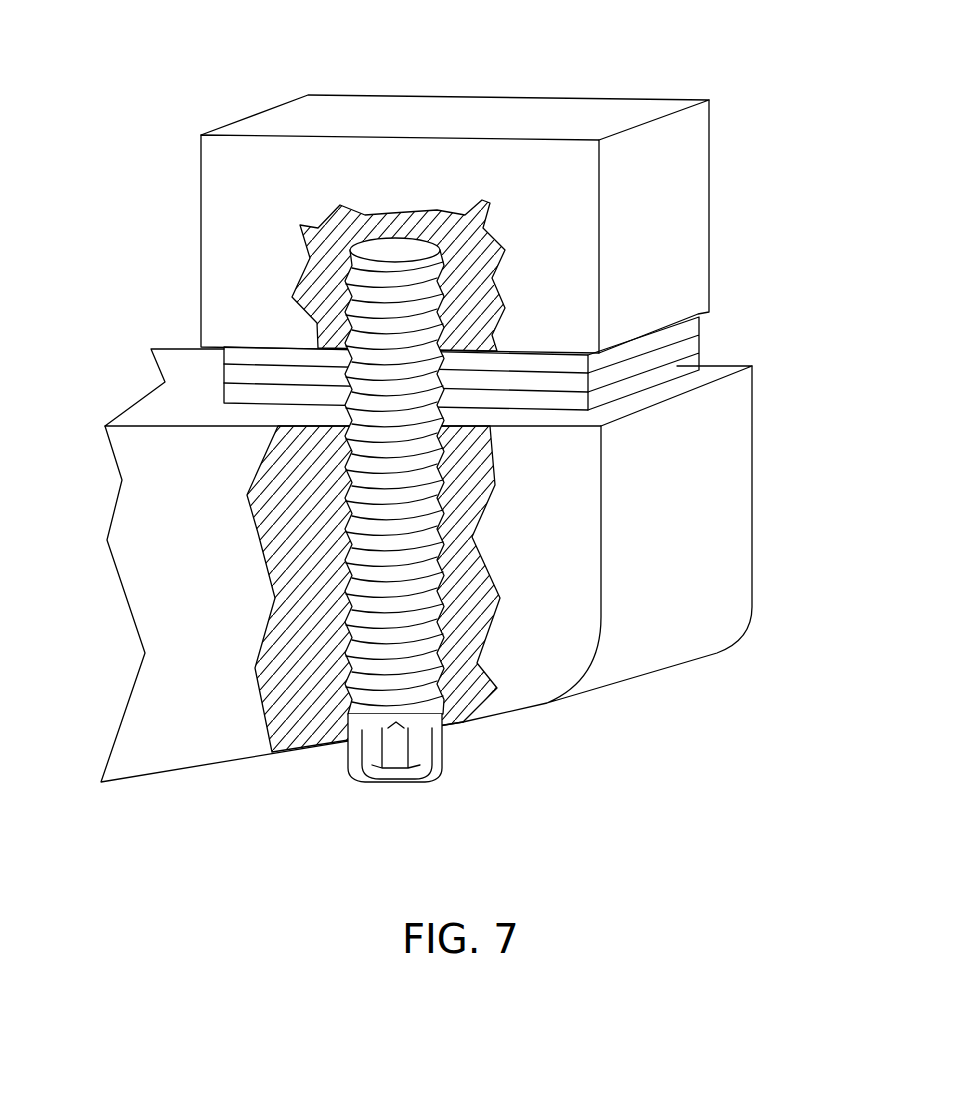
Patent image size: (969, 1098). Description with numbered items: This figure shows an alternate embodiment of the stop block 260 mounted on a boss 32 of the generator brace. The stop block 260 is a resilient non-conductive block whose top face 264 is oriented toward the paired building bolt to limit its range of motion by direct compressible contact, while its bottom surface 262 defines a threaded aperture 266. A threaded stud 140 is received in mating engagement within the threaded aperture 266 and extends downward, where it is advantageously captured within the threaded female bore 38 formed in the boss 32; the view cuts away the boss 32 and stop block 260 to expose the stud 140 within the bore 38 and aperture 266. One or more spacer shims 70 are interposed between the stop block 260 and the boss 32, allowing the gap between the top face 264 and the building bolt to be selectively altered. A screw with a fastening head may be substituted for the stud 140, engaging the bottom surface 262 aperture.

The stop block 260 is at (468, 212).
The top face 264 is at (335, 120).
The threaded aperture 266 is at (482, 201).
The bottom surface 262 is at (673, 328).
The spacer shim 70 is at (752, 367).
The boss 32 is at (470, 565).
The threaded female bore 38 is at (284, 536).
The threaded stud 140 is at (415, 785).